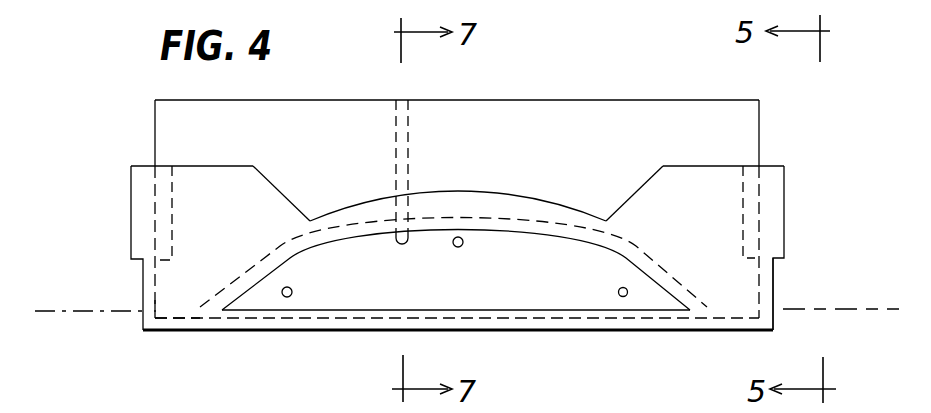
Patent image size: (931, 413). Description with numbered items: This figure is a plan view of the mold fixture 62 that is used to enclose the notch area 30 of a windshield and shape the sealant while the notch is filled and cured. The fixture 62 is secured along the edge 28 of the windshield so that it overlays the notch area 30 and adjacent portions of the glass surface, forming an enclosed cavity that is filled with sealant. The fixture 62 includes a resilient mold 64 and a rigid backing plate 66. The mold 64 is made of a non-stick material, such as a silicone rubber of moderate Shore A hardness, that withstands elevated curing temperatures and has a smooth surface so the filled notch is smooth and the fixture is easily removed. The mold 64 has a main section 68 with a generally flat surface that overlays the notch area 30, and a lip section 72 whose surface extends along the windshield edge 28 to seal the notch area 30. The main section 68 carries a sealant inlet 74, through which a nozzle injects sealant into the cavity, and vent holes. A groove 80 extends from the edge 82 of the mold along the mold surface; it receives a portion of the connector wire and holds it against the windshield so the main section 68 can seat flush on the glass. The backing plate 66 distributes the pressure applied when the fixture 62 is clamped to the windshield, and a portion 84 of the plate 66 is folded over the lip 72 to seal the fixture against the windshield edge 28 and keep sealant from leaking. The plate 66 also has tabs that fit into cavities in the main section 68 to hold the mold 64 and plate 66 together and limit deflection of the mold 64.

The edge 28 is at (805, 310).
The notch area 30 is at (540, 224).
The mold fixture 62 is at (467, 208).
The resilient mold 64 is at (759, 113).
The rigid backing plate 66 is at (774, 281).
The main section 68 is at (155, 136).
The lip section 72 is at (188, 319).
The sealant inlet 74 is at (460, 248).
The groove 80 is at (408, 147).
The edge 82 is at (318, 100).
The portion of plate 84 is at (662, 331).